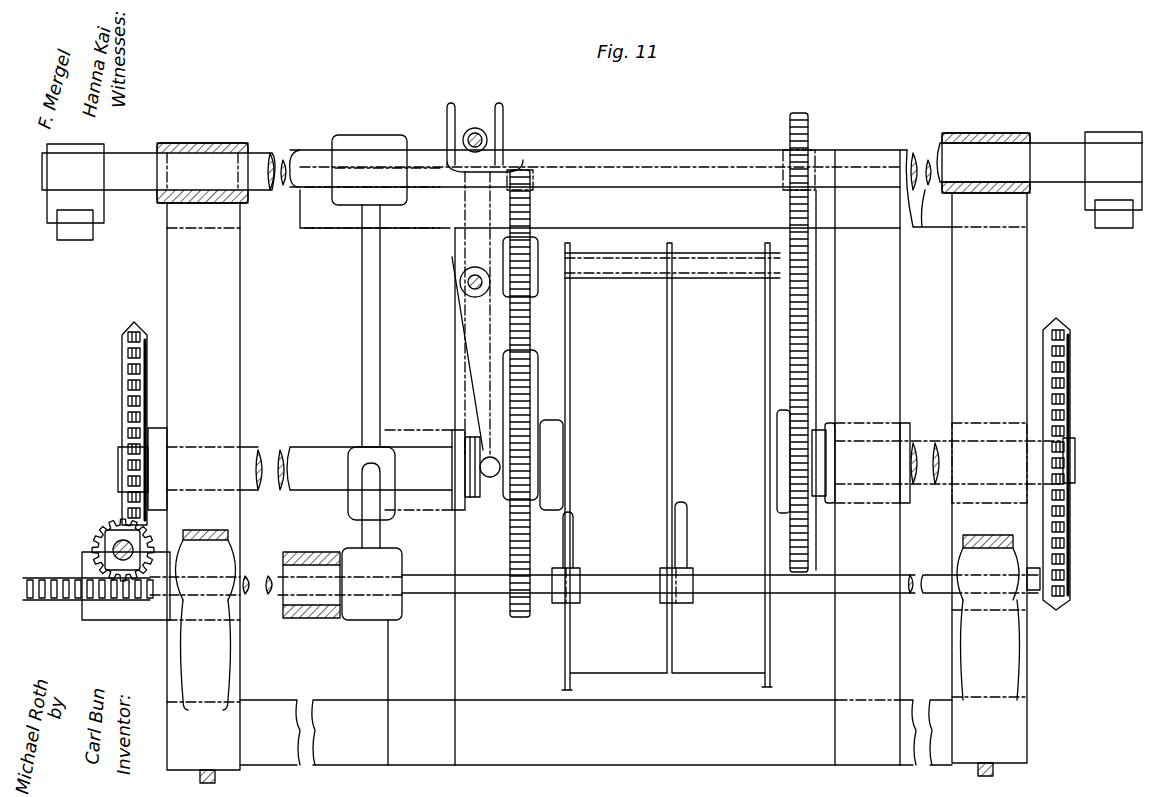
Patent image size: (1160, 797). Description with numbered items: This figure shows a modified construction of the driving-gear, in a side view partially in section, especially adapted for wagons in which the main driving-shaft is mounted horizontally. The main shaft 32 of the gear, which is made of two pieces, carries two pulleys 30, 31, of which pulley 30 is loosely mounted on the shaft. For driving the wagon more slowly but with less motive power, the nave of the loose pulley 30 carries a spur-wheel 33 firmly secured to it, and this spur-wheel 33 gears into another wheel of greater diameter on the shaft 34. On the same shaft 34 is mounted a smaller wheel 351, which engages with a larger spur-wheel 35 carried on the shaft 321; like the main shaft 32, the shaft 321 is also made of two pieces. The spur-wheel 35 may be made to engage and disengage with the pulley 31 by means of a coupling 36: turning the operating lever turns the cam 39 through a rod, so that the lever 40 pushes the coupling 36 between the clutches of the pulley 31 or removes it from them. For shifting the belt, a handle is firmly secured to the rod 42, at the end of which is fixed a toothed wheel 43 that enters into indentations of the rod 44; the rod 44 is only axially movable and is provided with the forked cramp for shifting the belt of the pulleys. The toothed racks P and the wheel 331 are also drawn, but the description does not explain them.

The loose pulley 30 is at (719, 465).
The pulley 31 is at (614, 466).
The main shaft 32 is at (944, 480).
The shaft 321 is at (285, 469).
The spur-wheel 33 is at (810, 520).
The toothed wheel 331 is at (811, 120).
The shaft 34 is at (733, 258).
The spur-wheel 35 is at (518, 612).
The smaller wheel 351 is at (531, 203).
The coupling 36 is at (484, 500).
The cam 39 is at (474, 128).
The lever 40 is at (476, 297).
The rod 42 is at (104, 542).
The toothed wheel 43 is at (118, 522).
The rod 44 is at (52, 577).
The rack P is at (133, 328).